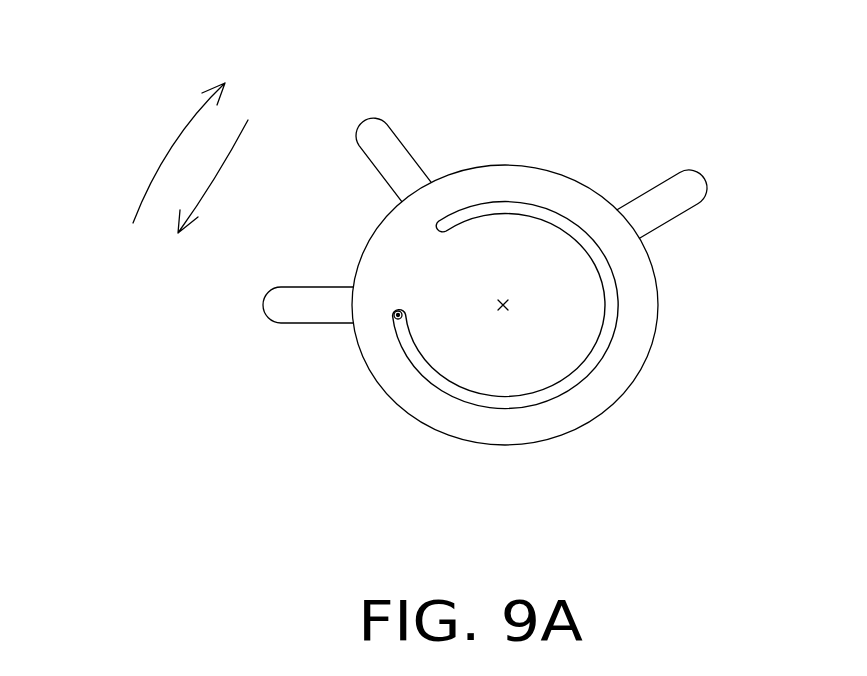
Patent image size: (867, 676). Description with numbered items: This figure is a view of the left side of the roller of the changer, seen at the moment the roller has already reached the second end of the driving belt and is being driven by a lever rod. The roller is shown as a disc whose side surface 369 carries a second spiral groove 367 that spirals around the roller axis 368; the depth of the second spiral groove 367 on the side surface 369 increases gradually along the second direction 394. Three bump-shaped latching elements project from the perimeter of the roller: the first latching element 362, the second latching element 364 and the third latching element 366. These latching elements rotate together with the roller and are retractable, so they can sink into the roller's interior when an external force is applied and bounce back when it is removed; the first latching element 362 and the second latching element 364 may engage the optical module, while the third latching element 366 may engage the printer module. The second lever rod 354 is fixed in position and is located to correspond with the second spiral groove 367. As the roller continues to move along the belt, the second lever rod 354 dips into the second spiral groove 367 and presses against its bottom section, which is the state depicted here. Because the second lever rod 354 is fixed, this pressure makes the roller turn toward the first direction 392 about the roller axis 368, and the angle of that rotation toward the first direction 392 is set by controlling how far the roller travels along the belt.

The second lever rod 354 is at (392, 325).
The first latching element 362 is at (377, 138).
The second latching element 364 is at (282, 312).
The third latching element 366 is at (688, 192).
The second spiral groove 367 is at (528, 408).
The roller axis 368 is at (503, 307).
The side surface 369 is at (628, 358).
The first direction 392 is at (165, 158).
The second direction 394 is at (200, 190).